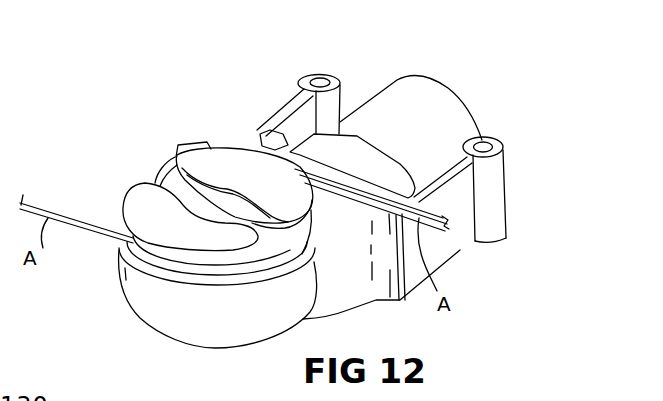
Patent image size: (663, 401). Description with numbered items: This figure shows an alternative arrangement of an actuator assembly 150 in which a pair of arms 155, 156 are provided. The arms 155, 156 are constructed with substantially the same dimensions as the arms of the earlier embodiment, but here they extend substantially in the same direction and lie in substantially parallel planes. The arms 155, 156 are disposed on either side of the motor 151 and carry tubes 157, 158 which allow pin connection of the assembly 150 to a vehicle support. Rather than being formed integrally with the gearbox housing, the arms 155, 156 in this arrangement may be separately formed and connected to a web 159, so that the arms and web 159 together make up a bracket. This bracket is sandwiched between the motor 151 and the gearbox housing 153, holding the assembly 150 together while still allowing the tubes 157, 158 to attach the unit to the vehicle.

The assembly 150 is at (246, 90).
The motor 151 is at (417, 103).
The gearbox housing 153 is at (200, 327).
The arm 155 is at (262, 121).
The arm 156 is at (453, 247).
The tube 157 is at (330, 73).
The tube 158 is at (489, 203).
The web 159 is at (258, 132).